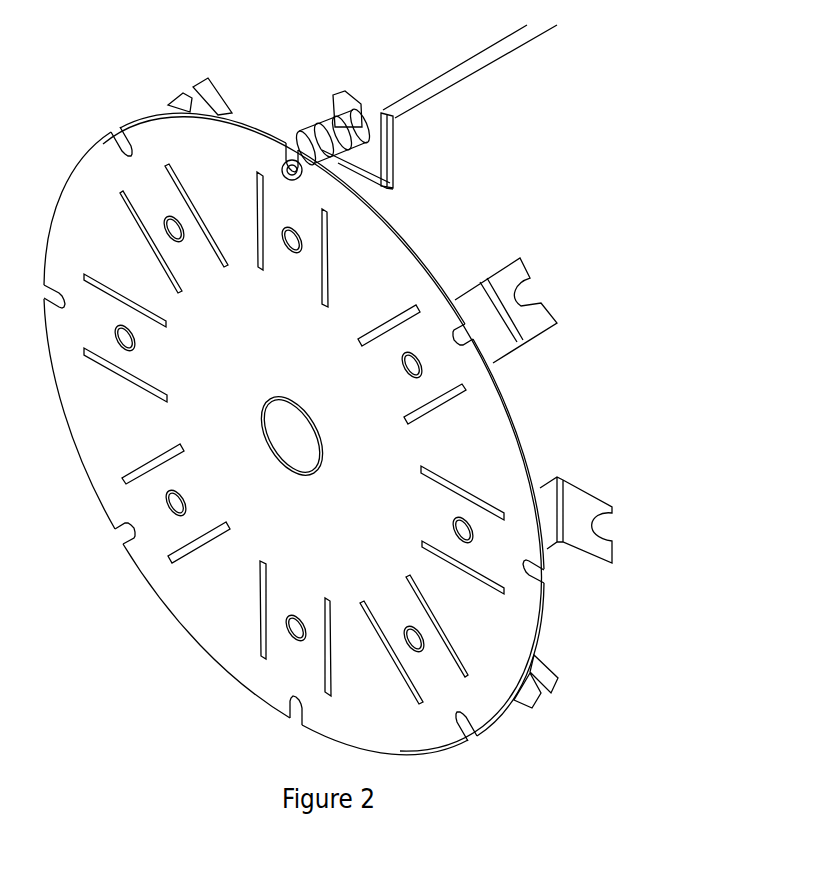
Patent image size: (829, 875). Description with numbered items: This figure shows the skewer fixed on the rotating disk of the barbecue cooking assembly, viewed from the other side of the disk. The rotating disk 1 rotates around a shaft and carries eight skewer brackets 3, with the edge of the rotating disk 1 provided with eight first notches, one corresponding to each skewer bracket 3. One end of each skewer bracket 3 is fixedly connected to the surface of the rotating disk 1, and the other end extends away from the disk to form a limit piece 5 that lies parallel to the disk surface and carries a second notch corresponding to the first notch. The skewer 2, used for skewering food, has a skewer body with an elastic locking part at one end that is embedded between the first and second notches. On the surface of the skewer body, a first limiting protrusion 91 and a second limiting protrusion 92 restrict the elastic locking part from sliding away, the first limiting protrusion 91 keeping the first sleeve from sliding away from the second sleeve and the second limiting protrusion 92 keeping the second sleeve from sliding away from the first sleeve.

The rotating disk 1 is at (512, 612).
The skewer 2 is at (493, 58).
The skewer bracket 3 is at (380, 188).
The limit piece 5 is at (382, 152).
The first limiting protrusion 91 is at (290, 163).
The second limiting protrusion 92 is at (393, 110).